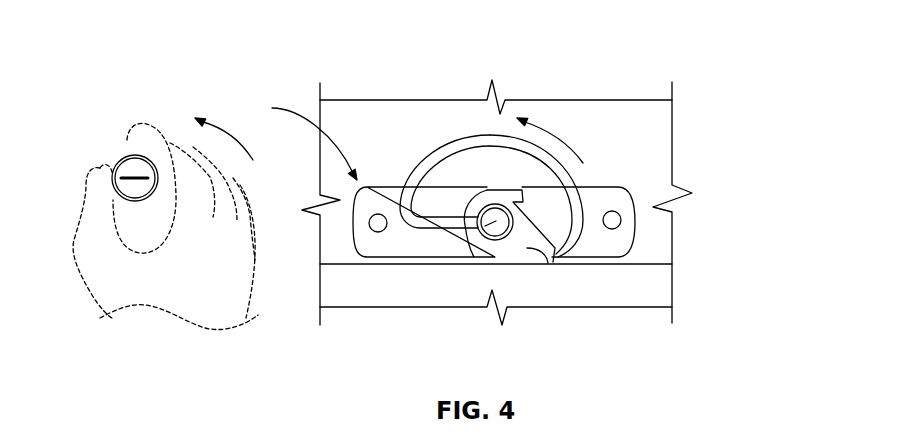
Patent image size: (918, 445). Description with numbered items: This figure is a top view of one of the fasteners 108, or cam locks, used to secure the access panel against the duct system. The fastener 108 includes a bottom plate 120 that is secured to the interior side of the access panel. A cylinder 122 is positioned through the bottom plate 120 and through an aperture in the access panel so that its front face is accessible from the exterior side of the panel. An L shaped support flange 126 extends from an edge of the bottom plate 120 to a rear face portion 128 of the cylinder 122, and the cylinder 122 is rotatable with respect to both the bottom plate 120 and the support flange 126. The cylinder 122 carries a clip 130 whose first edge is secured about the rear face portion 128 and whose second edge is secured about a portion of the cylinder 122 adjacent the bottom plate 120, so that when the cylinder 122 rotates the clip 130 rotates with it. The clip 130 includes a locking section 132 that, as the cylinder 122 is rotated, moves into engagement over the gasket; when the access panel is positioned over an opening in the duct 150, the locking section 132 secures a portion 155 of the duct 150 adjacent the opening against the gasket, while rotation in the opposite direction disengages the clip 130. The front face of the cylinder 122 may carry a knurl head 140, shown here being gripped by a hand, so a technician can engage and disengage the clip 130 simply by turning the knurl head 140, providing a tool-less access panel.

The fastener 108 is at (389, 140).
The bottom plate 120 is at (600, 198).
The cylinder 122 is at (479, 212).
The L shaped support flange 126 is at (541, 252).
The rear face portion 128 is at (487, 192).
The clip 130 is at (417, 158).
The locking section 132 is at (543, 162).
The knurl head 140 is at (118, 170).
The duct 150 is at (665, 285).
The portion of the duct 155 is at (653, 262).